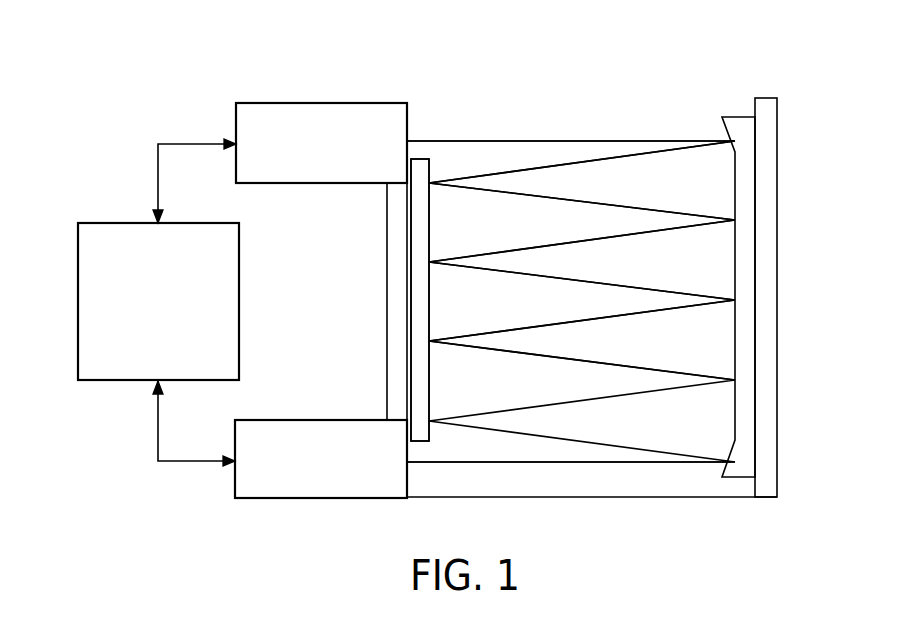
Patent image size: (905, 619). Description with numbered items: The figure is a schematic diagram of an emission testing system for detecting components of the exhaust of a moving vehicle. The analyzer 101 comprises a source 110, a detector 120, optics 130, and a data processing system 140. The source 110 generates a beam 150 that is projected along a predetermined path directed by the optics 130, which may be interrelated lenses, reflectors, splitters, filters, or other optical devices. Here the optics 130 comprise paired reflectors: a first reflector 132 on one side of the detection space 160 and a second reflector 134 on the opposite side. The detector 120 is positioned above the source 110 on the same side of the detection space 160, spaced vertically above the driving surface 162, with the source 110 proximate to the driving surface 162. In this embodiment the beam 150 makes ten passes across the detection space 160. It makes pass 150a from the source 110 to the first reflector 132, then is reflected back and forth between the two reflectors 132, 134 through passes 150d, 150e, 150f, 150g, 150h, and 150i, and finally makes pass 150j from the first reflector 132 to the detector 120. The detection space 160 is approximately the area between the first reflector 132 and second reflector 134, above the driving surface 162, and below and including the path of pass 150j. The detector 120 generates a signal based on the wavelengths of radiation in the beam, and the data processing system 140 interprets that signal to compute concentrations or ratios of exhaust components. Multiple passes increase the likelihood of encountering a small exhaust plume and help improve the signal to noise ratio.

The analyzer 101 is at (148, 95).
The source 110 is at (267, 499).
The detector 120 is at (329, 103).
The optics 130 is at (417, 158).
The first reflector 132 is at (745, 402).
The second reflector 134 is at (417, 277).
The data processing system 140 is at (78, 306).
The beam 150 is at (603, 463).
The pass 150a is at (507, 463).
The pass 150d is at (668, 368).
The pass 150e is at (547, 322).
The pass 150f is at (670, 290).
The pass 150g is at (547, 243).
The pass 150h is at (670, 208).
The pass 150i is at (510, 169).
The pass 150j is at (565, 140).
The detection space 160 is at (707, 263).
The driving surface 162 is at (703, 497).